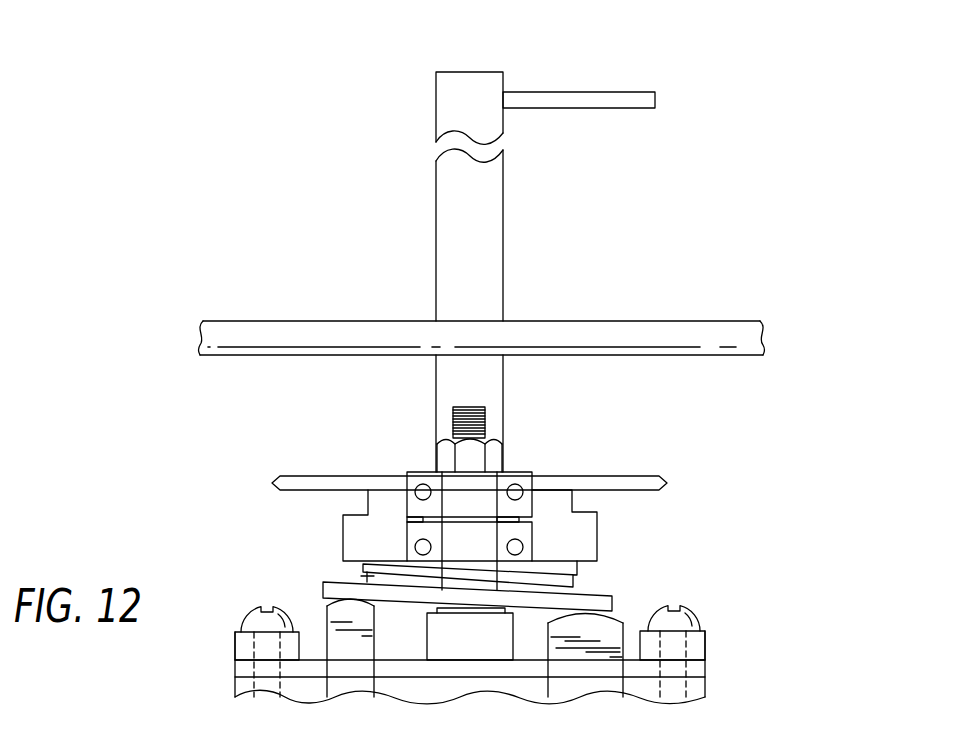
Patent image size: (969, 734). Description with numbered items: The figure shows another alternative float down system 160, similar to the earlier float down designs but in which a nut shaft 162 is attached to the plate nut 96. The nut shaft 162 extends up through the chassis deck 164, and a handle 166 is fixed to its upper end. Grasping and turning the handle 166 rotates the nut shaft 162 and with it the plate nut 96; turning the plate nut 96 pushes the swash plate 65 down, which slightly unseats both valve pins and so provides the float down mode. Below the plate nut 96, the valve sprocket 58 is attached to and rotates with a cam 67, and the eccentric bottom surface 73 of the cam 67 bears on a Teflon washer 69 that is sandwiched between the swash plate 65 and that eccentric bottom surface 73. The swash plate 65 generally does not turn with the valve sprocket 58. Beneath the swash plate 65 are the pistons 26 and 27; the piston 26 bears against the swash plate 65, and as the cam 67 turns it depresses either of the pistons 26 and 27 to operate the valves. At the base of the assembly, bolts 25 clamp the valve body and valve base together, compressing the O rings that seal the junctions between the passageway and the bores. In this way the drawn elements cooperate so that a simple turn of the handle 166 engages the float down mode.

The float down system 160 is at (668, 231).
The nut shaft 162 is at (455, 238).
The chassis deck 164 is at (235, 323).
The handle 166 is at (608, 99).
The plate nut 96 is at (496, 452).
The valve sprocket 58 is at (636, 478).
The cam 67 is at (585, 522).
The Teflon washer 69 is at (372, 575).
The eccentric bottom surface 73 is at (590, 566).
The swash plate 65 is at (600, 600).
The bolts 25 is at (690, 618).
The piston 26 is at (340, 651).
The piston 27 is at (610, 643).